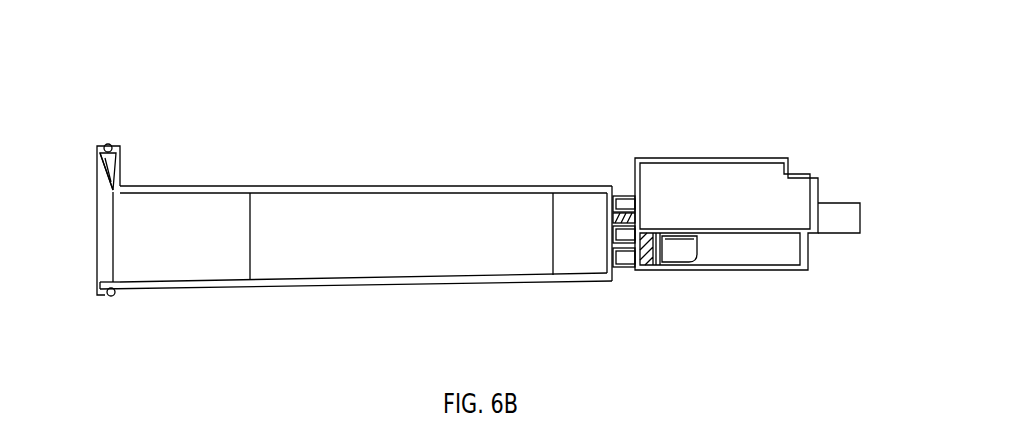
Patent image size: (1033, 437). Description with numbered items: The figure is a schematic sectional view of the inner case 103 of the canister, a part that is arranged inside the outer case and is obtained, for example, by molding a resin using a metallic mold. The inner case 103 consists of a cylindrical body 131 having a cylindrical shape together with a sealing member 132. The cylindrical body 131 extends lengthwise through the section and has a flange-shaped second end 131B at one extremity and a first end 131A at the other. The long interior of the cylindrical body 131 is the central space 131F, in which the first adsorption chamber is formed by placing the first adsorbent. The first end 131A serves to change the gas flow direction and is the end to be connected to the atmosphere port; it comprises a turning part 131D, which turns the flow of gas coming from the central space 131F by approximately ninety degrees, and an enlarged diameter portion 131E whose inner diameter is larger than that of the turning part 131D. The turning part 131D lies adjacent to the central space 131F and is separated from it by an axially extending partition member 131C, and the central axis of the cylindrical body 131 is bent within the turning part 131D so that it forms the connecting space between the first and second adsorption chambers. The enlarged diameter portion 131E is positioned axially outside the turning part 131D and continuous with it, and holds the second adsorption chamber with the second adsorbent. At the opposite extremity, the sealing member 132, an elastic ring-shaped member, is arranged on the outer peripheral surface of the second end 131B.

The inner case 103 is at (153, 50).
The cylindrical body 131 is at (345, 186).
The first end 131A is at (695, 281).
The second end 131B is at (126, 173).
The partition member 131C is at (622, 268).
The turning part 131D is at (760, 244).
The enlarged diameter portion 131E is at (795, 201).
The central space 131F is at (489, 216).
The sealing member 132 is at (108, 298).